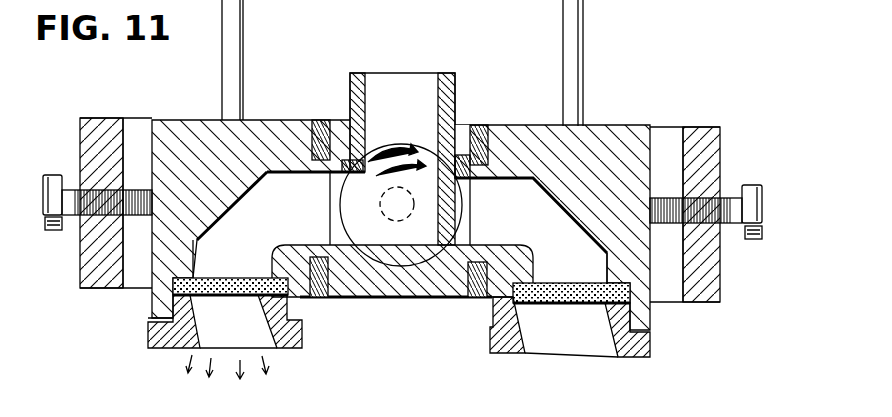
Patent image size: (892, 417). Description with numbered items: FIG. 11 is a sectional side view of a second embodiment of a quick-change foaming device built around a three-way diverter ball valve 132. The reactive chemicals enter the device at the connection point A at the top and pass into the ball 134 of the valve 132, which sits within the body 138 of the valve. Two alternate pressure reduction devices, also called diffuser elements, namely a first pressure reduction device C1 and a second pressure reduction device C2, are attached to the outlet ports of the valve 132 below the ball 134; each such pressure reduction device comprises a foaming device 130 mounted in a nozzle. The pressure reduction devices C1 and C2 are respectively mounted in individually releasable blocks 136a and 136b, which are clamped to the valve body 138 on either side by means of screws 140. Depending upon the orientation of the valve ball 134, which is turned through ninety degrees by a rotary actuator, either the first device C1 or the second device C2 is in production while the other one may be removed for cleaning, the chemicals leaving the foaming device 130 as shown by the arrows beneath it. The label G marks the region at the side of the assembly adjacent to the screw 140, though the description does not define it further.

The foaming device 130 is at (193, 345).
The 3-way diverter ball valve 132 is at (440, 132).
The ball 134 is at (408, 240).
The releasable block 136a is at (258, 127).
The releasable block 136b is at (625, 140).
The valve body 138 is at (468, 160).
The screw 140 is at (50, 232).
The connection point A is at (402, 20).
The first pressure reduction device C1 is at (300, 335).
The second pressure reduction device C2 is at (652, 338).
The gas G is at (762, 242).